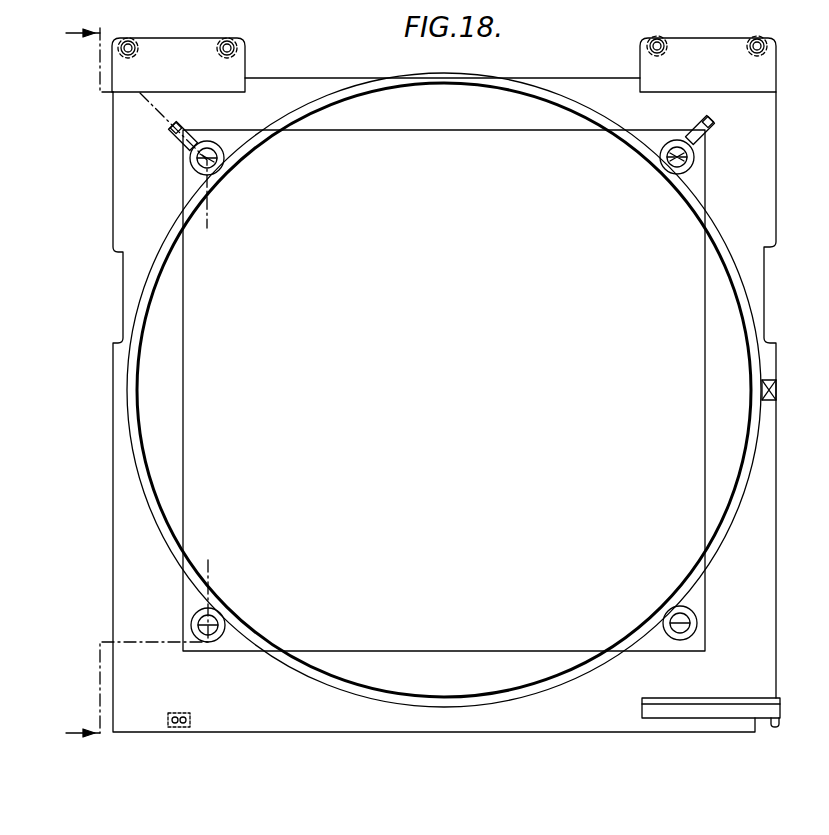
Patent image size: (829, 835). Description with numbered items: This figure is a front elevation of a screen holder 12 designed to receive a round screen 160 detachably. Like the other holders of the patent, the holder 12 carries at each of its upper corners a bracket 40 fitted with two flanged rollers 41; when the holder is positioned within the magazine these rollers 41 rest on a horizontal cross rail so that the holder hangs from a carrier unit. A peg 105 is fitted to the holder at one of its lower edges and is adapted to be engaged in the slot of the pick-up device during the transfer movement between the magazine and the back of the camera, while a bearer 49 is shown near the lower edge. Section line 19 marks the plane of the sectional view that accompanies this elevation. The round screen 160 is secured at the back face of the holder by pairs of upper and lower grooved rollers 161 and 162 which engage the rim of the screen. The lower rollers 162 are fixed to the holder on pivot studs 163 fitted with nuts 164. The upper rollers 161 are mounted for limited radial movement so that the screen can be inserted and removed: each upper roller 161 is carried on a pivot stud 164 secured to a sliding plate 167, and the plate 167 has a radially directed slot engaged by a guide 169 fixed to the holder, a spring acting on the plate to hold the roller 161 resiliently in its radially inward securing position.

The screen holder 12 is at (772, 632).
The section line 19 is at (125, 381).
The bracket 40 is at (242, 66).
The flanged roller 41 is at (224, 42).
The bearer 49 is at (191, 714).
The peg 105 is at (782, 722).
The screen 160 is at (177, 563).
The upper roller 161 is at (673, 171).
The lower roller 162 is at (221, 618).
The pivot stud 163 is at (212, 633).
The nut 164 is at (693, 165).
The sliding plate 167 is at (706, 131).
The guide 169 is at (712, 136).